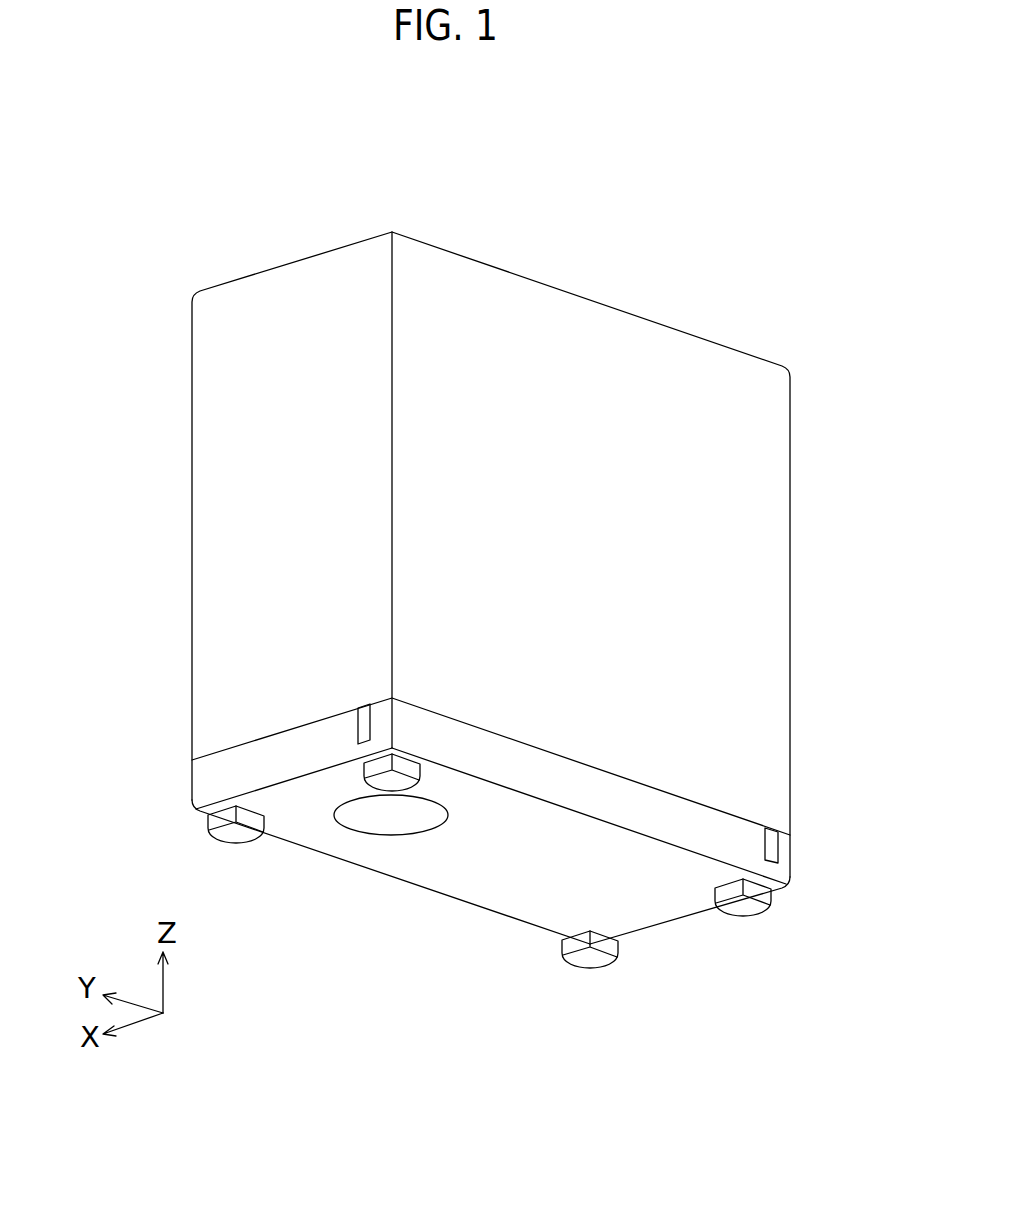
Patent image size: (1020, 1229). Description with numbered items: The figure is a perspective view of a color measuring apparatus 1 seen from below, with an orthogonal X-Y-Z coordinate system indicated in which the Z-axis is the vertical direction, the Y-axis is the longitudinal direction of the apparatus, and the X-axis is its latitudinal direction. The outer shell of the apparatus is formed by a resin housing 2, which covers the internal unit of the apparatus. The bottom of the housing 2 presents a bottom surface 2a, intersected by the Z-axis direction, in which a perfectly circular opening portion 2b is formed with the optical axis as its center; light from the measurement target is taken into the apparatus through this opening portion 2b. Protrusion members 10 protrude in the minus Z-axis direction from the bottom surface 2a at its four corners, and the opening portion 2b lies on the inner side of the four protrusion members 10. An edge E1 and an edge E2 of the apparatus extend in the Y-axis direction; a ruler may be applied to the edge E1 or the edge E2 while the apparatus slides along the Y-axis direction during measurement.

The color measuring apparatus 1 is at (493, 184).
The housing 2 is at (688, 367).
The bottom surface 2a is at (477, 868).
The opening portion 2b is at (382, 815).
The protrusion member 10 is at (383, 785).
The edge E1 is at (613, 826).
The edge E2 is at (413, 890).